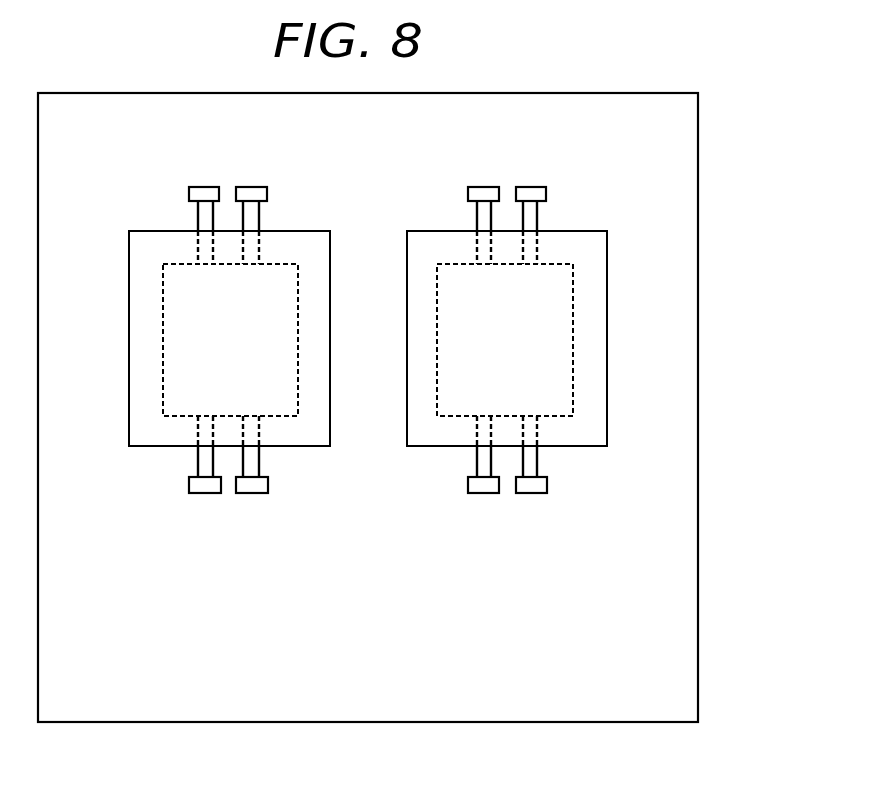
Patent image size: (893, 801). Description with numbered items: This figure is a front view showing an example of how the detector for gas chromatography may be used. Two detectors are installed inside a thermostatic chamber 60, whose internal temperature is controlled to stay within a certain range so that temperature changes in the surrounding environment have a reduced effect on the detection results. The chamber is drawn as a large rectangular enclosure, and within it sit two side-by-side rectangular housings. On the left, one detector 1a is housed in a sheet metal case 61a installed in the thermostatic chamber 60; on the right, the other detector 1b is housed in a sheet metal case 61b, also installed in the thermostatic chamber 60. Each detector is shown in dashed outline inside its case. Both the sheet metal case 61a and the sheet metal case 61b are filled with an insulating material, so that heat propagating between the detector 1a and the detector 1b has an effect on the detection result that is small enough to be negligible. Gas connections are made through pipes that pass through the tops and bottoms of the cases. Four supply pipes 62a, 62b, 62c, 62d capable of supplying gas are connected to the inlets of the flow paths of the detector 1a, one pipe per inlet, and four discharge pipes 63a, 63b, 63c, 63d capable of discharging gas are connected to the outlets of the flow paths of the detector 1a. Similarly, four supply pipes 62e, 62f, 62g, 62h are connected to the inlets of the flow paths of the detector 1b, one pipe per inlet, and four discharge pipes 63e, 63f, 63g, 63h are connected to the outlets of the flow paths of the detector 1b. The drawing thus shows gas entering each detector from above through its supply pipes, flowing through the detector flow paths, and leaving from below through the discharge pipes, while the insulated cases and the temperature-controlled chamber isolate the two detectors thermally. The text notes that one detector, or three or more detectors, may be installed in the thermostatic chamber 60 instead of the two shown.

The thermostatic chamber 60 is at (698, 318).
The sheet metal case 61a is at (129, 273).
The sheet metal case 61b is at (607, 274).
The detector 1a is at (282, 264).
The detector 1b is at (558, 264).
The supply pipe 62a is at (201, 187).
The supply pipe 62b is at (189, 193).
The supply pipe 62c is at (249, 187).
The supply pipe 62d is at (267, 193).
The supply pipe 62e is at (468, 193).
The supply pipe 62f is at (480, 187).
The supply pipe 62g is at (528, 187).
The supply pipe 62h is at (546, 193).
The discharge pipe 63a is at (189, 484).
The discharge pipe 63b is at (204, 493).
The discharge pipe 63c is at (252, 493).
The discharge pipe 63d is at (268, 486).
The discharge pipe 63e is at (468, 484).
The discharge pipe 63f is at (483, 493).
The discharge pipe 63g is at (531, 493).
The discharge pipe 63h is at (547, 486).